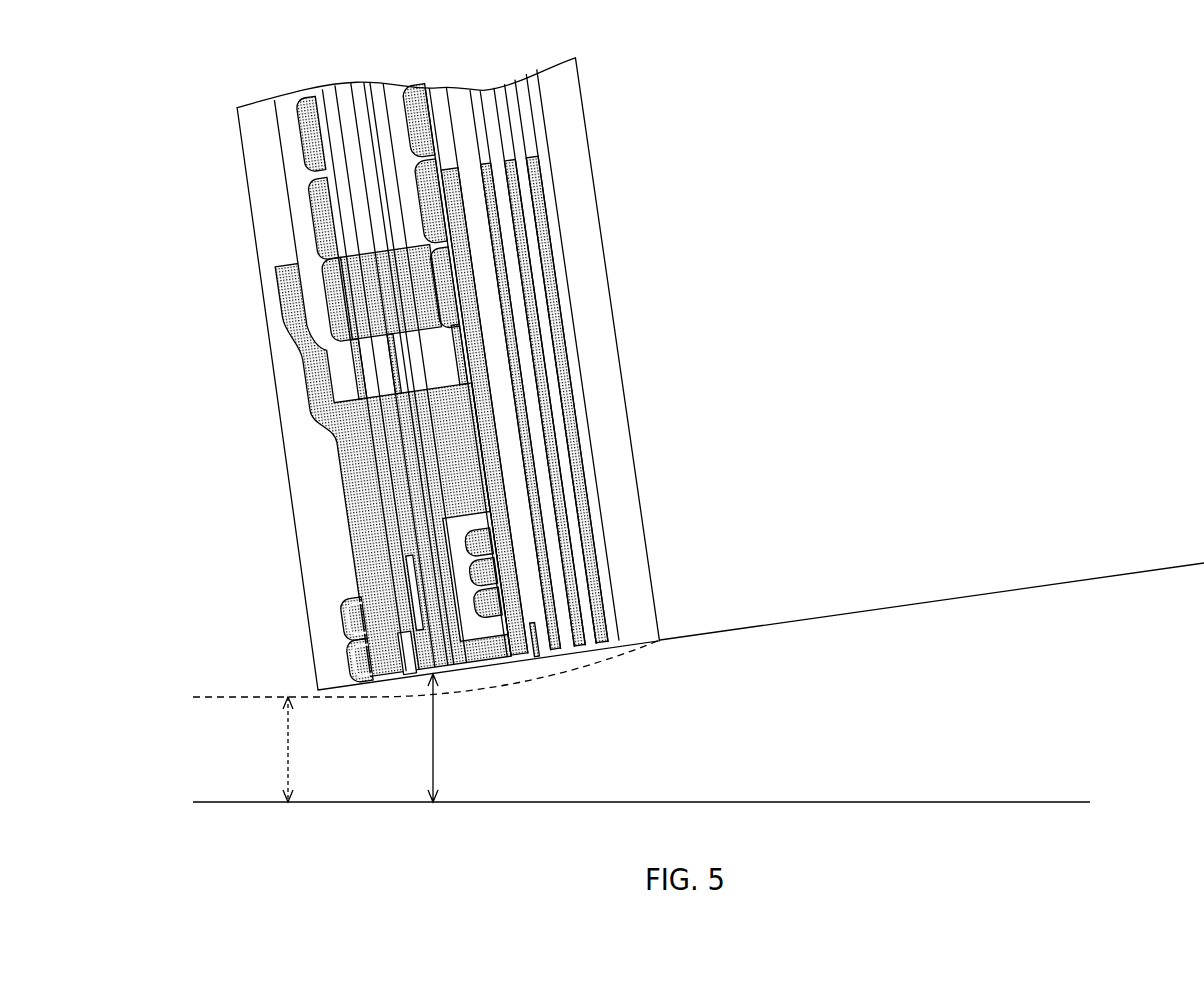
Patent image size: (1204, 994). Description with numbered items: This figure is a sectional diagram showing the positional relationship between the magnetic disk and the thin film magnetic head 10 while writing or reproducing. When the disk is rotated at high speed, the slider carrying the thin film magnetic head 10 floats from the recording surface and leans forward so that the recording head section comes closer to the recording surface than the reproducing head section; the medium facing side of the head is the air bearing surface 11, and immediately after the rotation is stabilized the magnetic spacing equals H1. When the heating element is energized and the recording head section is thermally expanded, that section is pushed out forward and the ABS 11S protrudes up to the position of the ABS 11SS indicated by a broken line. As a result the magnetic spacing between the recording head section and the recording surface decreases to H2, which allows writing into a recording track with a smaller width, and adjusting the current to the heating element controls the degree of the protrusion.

The thin film magnetic head 10 is at (227, 317).
The air bearing surface 11 is at (860, 612).
The ABS 11S is at (617, 650).
The ABS in protruded position 11SS is at (558, 667).
The magnetic spacing H1 is at (470, 738).
The magnetic spacing H2 is at (248, 749).